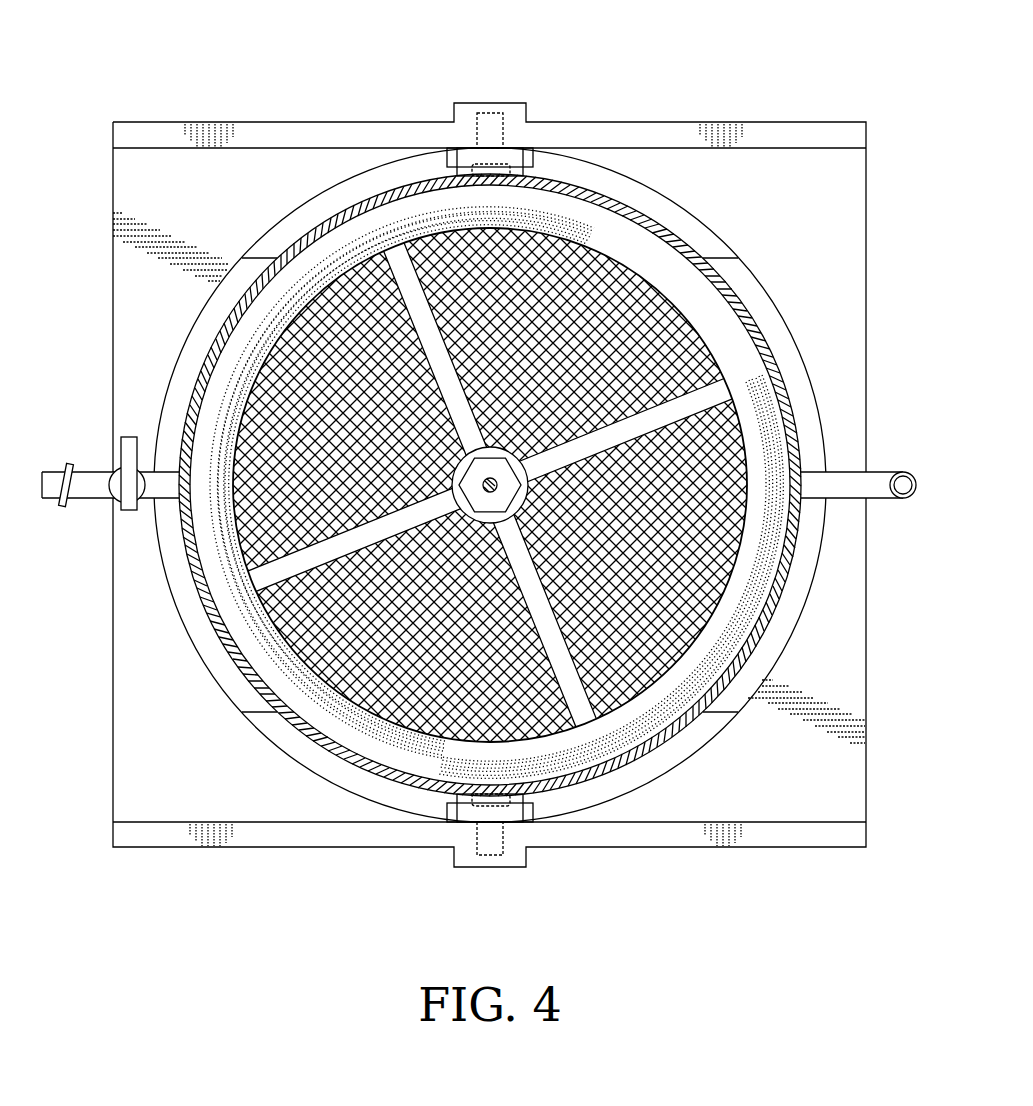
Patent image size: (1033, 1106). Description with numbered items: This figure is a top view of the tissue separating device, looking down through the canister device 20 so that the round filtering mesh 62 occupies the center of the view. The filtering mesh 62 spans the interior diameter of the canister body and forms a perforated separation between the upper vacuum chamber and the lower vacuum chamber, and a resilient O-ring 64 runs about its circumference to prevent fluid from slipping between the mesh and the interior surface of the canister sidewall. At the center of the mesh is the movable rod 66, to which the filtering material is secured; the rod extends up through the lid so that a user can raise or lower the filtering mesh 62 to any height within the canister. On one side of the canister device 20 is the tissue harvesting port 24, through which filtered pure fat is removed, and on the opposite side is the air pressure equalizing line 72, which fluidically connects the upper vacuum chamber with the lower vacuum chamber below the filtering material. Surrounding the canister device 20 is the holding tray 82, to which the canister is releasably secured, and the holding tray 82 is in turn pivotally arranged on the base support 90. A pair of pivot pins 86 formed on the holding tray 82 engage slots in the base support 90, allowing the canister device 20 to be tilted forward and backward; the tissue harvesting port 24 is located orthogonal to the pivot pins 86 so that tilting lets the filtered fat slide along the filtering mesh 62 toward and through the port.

The canister device 20 is at (378, 200).
The tissue harvesting port 24 is at (83, 482).
The filtering mesh 62 is at (707, 440).
The resilient O-ring 64 is at (603, 228).
The movable rod 66 is at (493, 488).
The air pressure equalizing line 72 is at (878, 482).
The holding tray 82 is at (707, 245).
The pivot pins 86 is at (505, 130).
The base support 90 is at (243, 135).